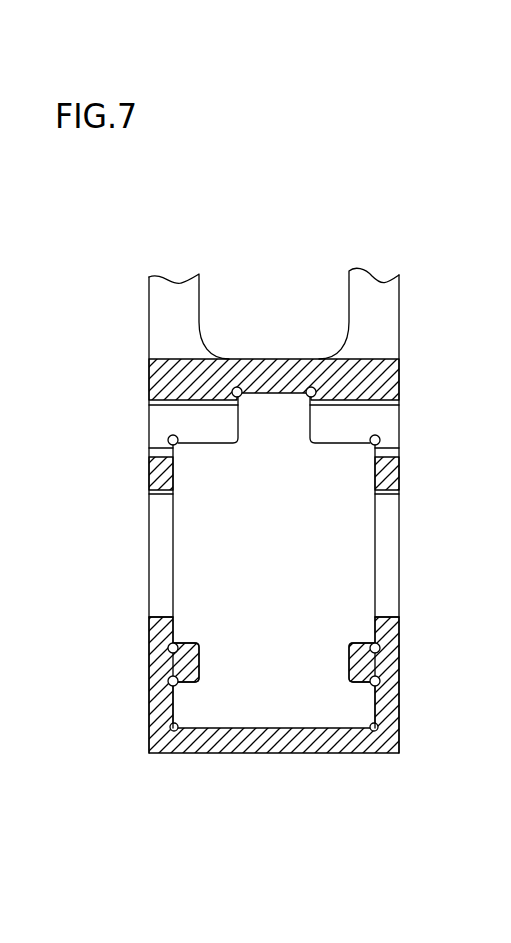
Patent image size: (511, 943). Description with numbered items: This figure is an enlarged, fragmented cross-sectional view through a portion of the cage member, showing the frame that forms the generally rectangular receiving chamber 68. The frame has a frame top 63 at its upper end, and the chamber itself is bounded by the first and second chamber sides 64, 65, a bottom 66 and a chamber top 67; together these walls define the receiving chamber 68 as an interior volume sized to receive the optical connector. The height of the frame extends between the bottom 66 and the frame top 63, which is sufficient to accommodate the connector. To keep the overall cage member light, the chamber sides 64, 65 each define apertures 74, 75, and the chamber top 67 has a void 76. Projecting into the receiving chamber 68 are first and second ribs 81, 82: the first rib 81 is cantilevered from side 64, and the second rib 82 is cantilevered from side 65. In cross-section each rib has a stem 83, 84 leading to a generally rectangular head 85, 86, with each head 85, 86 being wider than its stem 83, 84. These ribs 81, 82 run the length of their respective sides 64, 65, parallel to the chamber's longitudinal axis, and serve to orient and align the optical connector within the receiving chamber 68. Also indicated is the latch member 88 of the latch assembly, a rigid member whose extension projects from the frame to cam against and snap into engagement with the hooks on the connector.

The frame top 63 is at (273, 359).
The first chamber side 64 is at (148, 548).
The second chamber side 65 is at (401, 540).
The bottom 66 is at (262, 753).
The chamber top 67 is at (393, 455).
The receiving chamber 68 is at (193, 482).
The aperture 74 is at (393, 615).
The aperture 75 is at (160, 613).
The void 76 is at (375, 480).
The first rib 81 is at (202, 660).
The second rib 82 is at (350, 663).
The stem 83 is at (176, 645).
The stem 84 is at (377, 680).
The head 85 is at (180, 683).
The head 86 is at (362, 645).
The latch member 88 is at (395, 378).